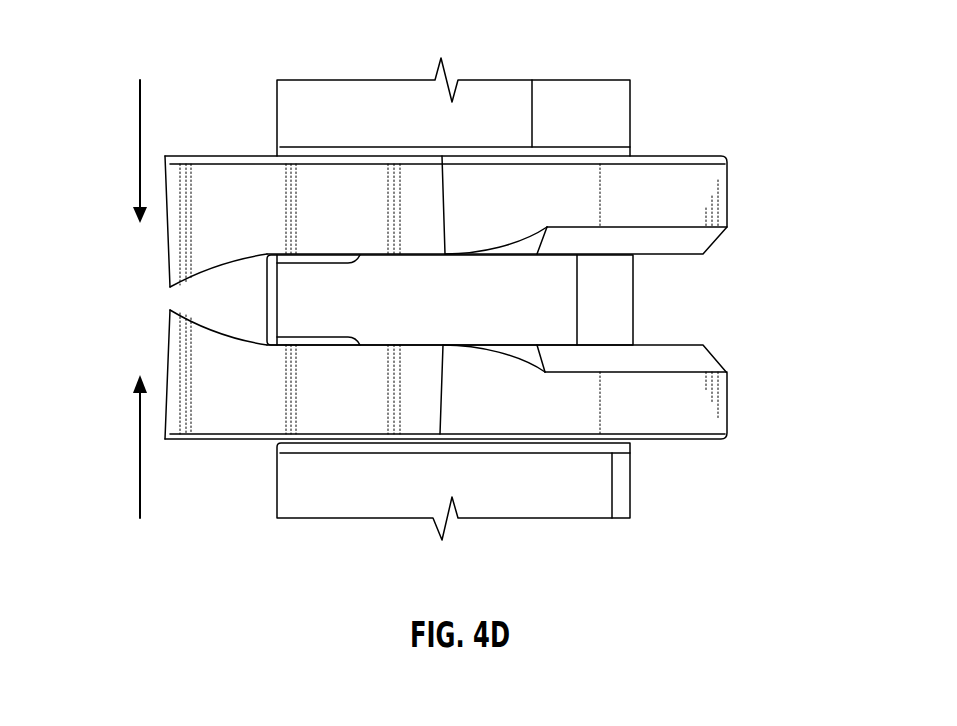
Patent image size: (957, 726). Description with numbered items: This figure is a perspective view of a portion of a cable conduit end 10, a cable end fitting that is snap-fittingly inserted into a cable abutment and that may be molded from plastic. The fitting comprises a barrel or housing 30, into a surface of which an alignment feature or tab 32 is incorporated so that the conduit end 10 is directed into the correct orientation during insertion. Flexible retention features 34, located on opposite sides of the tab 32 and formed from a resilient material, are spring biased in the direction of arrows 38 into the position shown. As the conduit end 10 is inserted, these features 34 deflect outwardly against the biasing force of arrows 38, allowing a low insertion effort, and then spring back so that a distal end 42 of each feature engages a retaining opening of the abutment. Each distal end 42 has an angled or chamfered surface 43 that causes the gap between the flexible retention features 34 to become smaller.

The cable conduit end 10 is at (713, 31).
The housing 30 is at (582, 502).
The alignment feature or tab 32 is at (293, 328).
The flexible retention features 34 is at (307, 210).
The arrows 38 is at (138, 157).
The distal end 42 is at (178, 268).
The angled or chamfered surface 43 is at (193, 318).